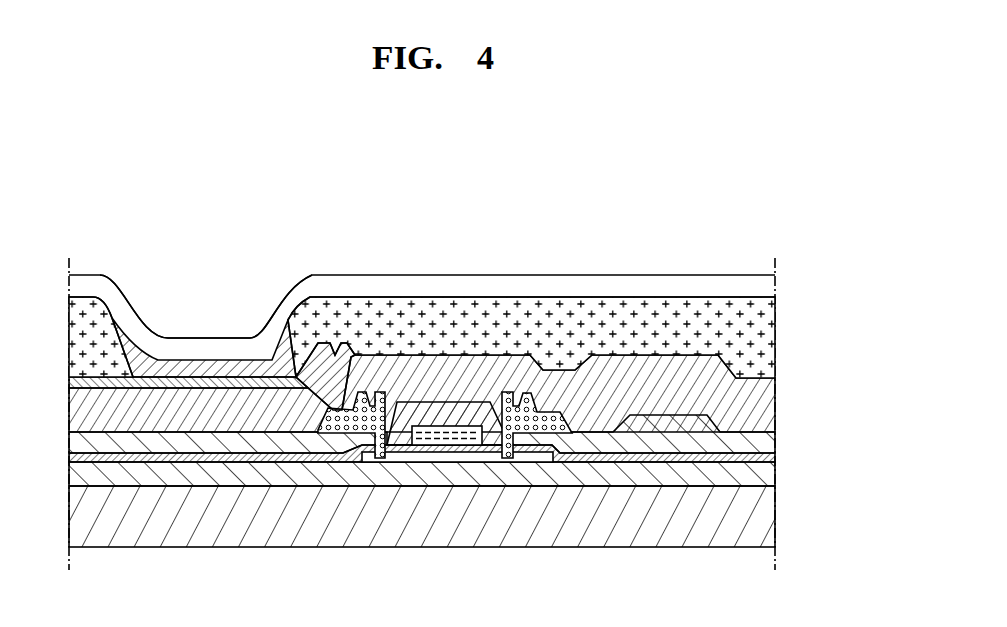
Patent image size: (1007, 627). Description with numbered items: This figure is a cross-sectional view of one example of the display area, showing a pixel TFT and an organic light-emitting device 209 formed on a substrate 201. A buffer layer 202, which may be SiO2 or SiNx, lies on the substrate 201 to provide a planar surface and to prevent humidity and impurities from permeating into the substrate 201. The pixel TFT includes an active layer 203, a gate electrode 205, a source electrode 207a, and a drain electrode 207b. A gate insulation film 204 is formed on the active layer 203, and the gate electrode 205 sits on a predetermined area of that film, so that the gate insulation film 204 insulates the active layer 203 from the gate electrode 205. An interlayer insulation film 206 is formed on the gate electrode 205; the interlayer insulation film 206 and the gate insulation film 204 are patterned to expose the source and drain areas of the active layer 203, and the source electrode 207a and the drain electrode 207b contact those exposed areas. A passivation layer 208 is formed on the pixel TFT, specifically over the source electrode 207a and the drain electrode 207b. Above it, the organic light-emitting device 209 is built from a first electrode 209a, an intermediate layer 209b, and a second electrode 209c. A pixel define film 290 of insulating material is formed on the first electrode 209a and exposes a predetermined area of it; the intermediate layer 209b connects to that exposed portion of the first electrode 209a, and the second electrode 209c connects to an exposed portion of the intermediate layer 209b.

The substrate 201 is at (768, 518).
The buffer layer 202 is at (768, 478).
The active layer 203 is at (487, 462).
The gate insulation film 204 is at (768, 462).
The gate electrode 205 is at (441, 437).
The interlayer insulation film 206 is at (768, 449).
The source electrode 207a is at (528, 418).
The drain electrode 207b is at (344, 440).
The passivation layer 208 is at (768, 404).
The organic light-emitting device 209 is at (422, 280).
The first electrode 209a is at (203, 378).
The intermediate layer 209b is at (140, 343).
The second electrode 209c is at (260, 190).
The pixel define film 290 is at (768, 340).
The pixel TFT is at (445, 398).